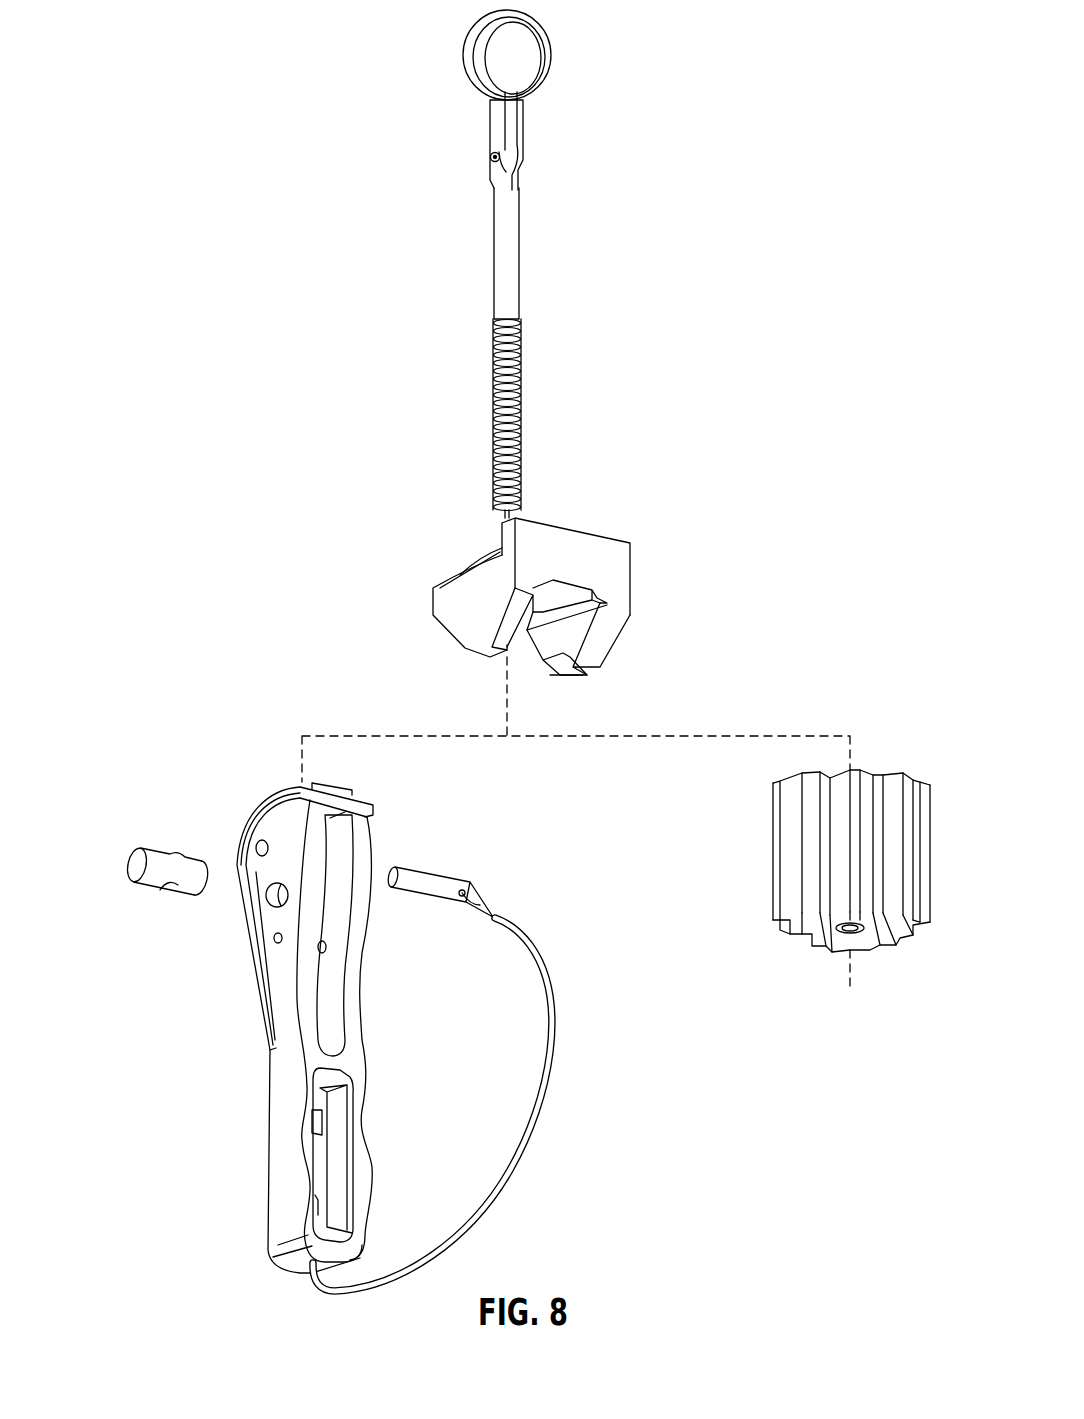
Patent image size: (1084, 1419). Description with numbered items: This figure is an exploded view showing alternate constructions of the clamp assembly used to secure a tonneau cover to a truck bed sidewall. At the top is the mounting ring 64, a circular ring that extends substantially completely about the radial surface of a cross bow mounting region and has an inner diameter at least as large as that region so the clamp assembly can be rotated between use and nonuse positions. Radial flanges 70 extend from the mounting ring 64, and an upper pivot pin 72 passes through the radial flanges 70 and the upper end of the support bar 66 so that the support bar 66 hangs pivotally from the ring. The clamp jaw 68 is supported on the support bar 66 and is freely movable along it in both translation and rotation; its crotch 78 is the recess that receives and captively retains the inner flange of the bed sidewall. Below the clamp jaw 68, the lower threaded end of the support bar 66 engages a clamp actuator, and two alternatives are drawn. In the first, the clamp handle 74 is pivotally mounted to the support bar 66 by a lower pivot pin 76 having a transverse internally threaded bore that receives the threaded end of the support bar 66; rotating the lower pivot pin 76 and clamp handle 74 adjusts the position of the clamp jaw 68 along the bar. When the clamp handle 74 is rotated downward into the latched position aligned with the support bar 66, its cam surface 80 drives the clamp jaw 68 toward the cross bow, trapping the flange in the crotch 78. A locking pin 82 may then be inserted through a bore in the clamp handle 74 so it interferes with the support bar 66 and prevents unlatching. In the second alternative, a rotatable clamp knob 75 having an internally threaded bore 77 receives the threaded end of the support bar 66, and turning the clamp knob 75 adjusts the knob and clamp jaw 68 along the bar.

The mounting ring 64 is at (473, 40).
The radial flanges 70 is at (497, 122).
The upper pivot pin 72 is at (491, 156).
The support bar 66 is at (503, 235).
The clamp jaw 68 is at (458, 605).
The crotch 78 is at (453, 578).
The clamp handle 74 is at (293, 1145).
The cam surface 80 is at (242, 820).
The lower pivot pin 76 is at (137, 862).
The locking pin 82 is at (445, 883).
The clamp knob 75 is at (875, 930).
The internally threaded bore 77 is at (848, 935).